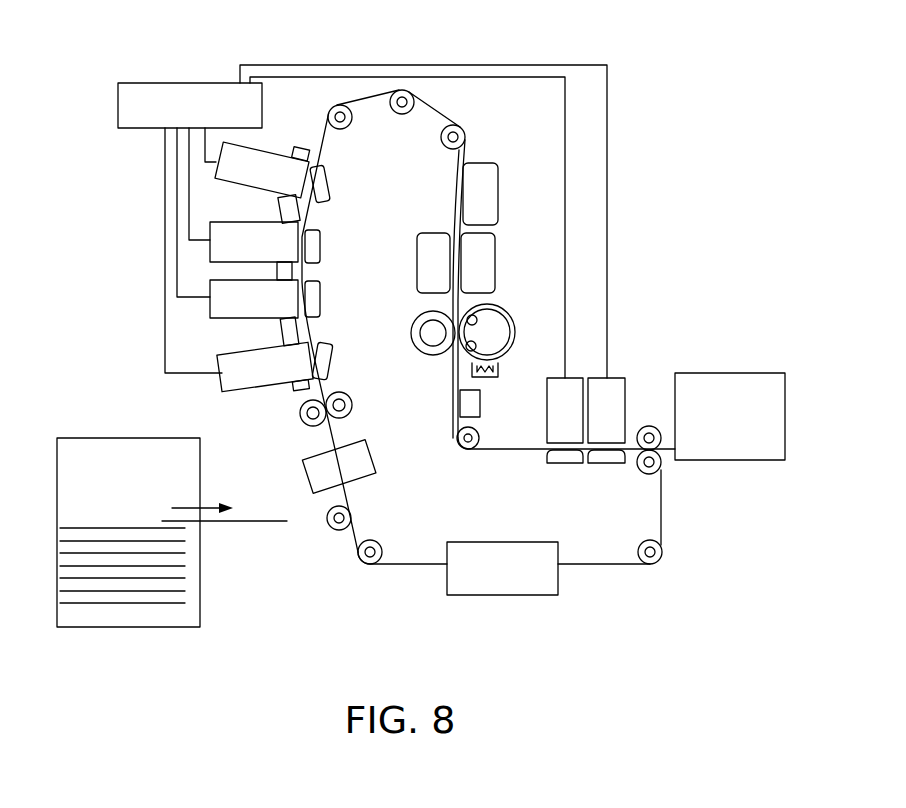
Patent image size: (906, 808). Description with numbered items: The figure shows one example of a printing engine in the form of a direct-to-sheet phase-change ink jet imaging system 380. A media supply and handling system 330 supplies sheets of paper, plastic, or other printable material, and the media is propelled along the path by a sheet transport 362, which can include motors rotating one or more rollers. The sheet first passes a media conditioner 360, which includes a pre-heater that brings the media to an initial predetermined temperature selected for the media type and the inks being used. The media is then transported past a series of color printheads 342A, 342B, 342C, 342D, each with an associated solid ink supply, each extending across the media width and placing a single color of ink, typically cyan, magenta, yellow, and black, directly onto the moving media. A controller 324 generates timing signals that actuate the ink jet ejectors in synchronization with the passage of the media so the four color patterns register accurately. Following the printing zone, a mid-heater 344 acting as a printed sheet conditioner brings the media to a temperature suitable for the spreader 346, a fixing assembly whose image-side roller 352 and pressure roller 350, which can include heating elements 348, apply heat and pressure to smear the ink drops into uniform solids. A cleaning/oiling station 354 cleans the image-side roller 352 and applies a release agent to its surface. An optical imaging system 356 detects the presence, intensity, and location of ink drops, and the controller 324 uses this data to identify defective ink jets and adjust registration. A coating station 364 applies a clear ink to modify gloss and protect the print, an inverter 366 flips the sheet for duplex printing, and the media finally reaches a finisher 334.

The controller 324 is at (181, 83).
The media supply and handling system 330 is at (95, 438).
The finisher 334 is at (727, 373).
The printhead 342A is at (221, 387).
The printhead 342B is at (210, 320).
The printhead 342C is at (210, 262).
The printhead 342D is at (215, 176).
The mid-heater 344 is at (417, 256).
The spreader 346 is at (565, 285).
The heating elements 348 is at (476, 344).
The pressure roller 350 is at (415, 353).
The image-side roller 352 is at (516, 348).
The cleaning/oiling station 354 is at (486, 372).
The optical imaging system 356 is at (461, 403).
The media conditioner 360 is at (303, 467).
The sheet transport 362 is at (451, 419).
The coating station 364 is at (623, 356).
The inverter 366 is at (560, 573).
The ink jet imaging system 380 is at (119, 243).